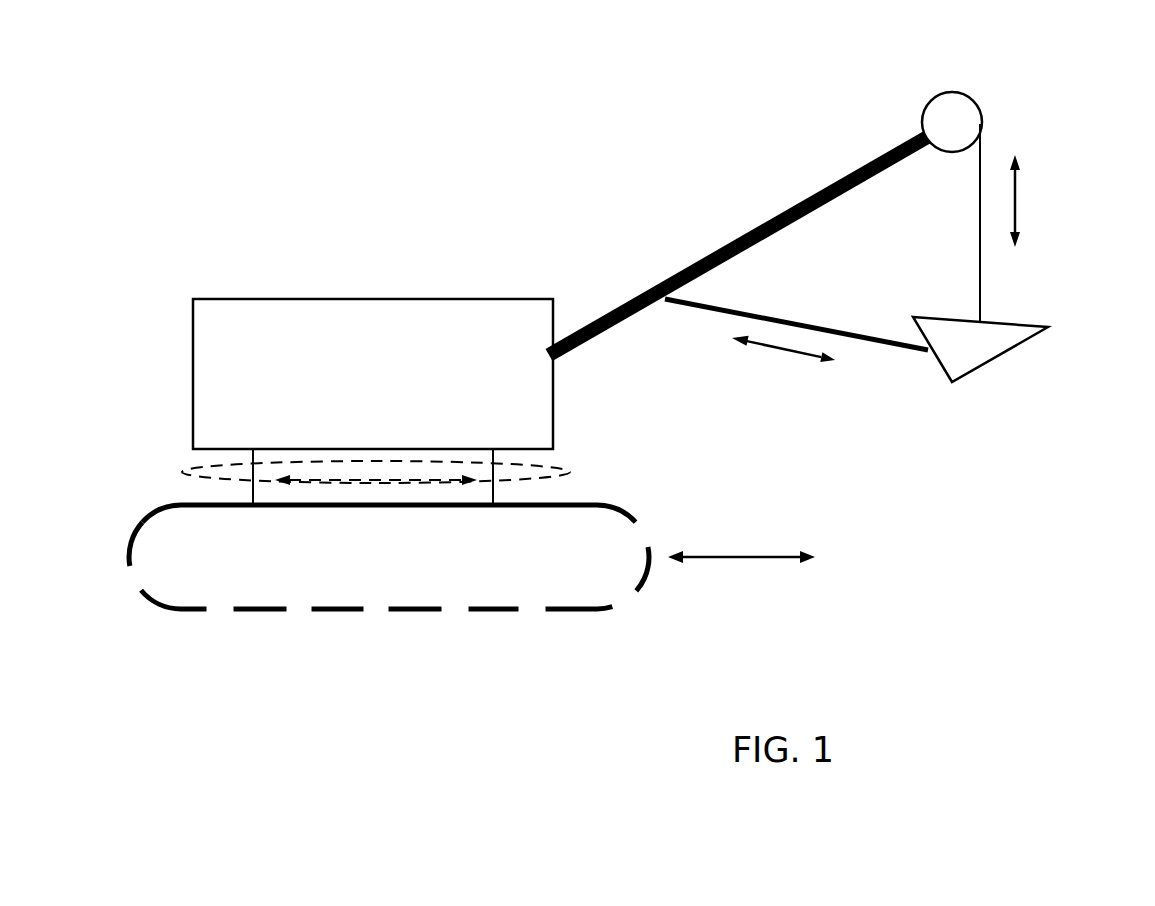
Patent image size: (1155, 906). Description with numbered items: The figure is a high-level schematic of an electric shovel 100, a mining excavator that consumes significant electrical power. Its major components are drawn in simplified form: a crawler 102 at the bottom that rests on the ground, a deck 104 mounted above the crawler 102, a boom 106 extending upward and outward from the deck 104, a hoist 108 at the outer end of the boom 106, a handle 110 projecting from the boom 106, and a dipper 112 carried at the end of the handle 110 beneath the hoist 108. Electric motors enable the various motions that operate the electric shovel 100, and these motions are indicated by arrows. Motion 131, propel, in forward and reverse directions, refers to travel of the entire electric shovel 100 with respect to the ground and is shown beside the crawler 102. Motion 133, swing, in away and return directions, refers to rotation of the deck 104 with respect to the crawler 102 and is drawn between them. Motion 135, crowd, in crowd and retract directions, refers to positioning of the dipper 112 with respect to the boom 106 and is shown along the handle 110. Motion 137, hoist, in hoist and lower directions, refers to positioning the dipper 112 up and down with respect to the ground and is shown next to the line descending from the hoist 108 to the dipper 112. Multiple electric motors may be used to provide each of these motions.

The electric shovel 100 is at (1007, 555).
The crawler 102 is at (389, 576).
The deck 104 is at (373, 387).
The boom 106 is at (749, 239).
The hoist 108 is at (952, 108).
The handle 110 is at (796, 322).
The dipper 112 is at (980, 353).
The propel motion 131 is at (725, 557).
The swing motion 133 is at (566, 472).
The crowd motion 135 is at (783, 360).
The hoist motion 137 is at (1015, 203).